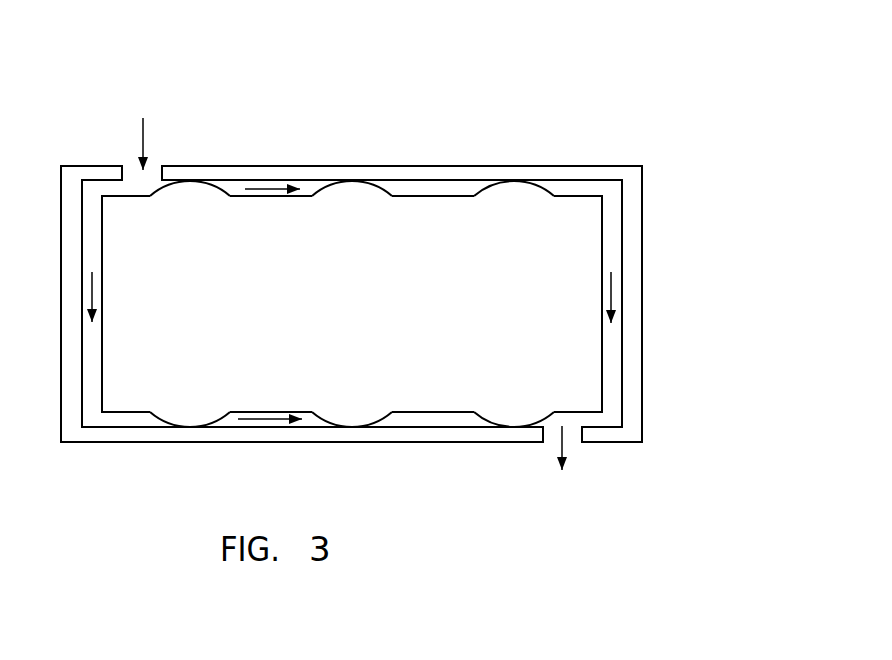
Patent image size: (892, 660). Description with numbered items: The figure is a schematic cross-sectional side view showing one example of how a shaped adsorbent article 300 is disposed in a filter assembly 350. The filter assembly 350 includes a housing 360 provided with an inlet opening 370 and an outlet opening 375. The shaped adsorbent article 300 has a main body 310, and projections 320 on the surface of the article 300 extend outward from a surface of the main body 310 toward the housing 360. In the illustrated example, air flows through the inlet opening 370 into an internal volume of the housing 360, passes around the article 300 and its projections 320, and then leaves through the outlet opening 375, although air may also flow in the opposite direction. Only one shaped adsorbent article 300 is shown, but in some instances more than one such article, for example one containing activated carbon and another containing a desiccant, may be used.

The shaped adsorbent article 300 is at (582, 195).
The main body 310 is at (602, 383).
The projections 320 is at (213, 184).
The filter assembly 350 is at (442, 120).
The housing 360 is at (642, 280).
The inlet opening 370 is at (128, 152).
The outlet opening 375 is at (578, 450).